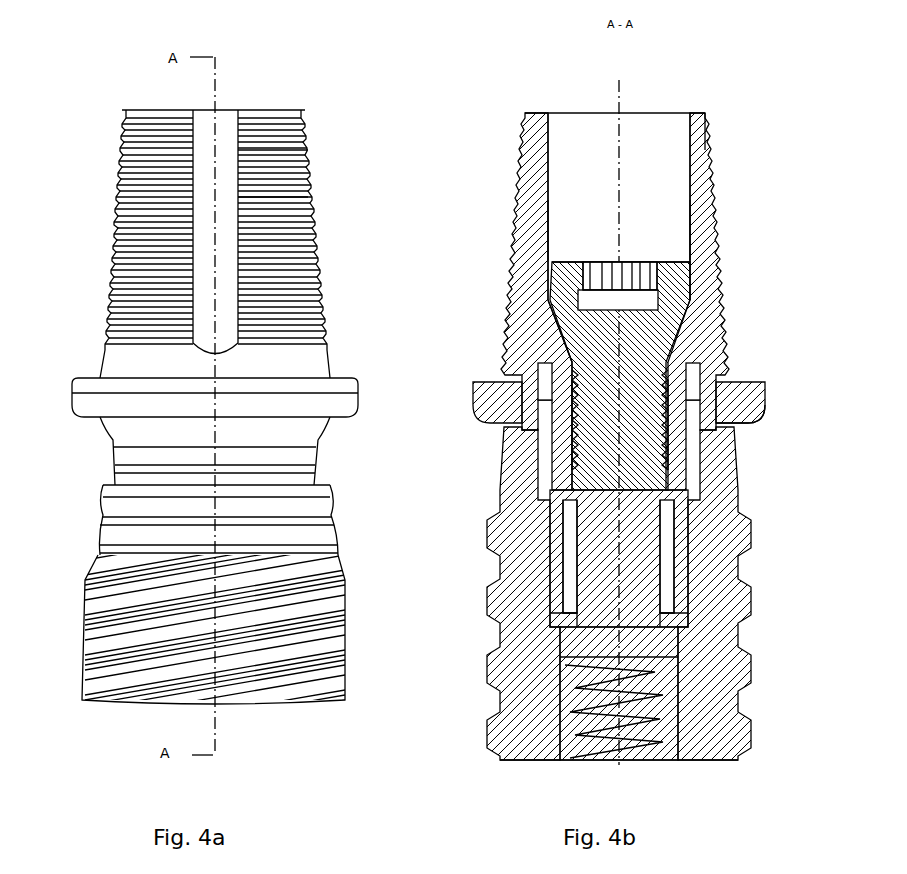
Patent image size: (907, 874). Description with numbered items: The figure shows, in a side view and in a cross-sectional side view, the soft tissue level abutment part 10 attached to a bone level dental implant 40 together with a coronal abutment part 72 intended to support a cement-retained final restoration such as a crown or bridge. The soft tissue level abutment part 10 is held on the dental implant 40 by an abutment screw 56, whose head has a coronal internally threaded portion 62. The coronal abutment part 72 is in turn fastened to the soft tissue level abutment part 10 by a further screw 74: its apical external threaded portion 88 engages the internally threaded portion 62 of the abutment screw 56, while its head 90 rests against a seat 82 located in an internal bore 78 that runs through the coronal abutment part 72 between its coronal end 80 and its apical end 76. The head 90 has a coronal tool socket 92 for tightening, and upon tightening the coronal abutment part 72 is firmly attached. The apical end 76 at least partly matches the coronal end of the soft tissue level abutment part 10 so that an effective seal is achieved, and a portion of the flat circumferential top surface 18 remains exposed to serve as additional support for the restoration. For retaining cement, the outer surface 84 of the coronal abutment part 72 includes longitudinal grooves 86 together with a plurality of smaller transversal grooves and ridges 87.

In FIG. 4A, the soft tissue level abutment part 10 is at (322, 430).
In FIG. 4B, the soft tissue level abutment part 10 is at (716, 470).
In FIG. 4B, the flat circumferential top surface 18 is at (480, 381).
In FIG. 4A, the dental implant 40 is at (334, 493).
In FIG. 4B, the dental implant 40 is at (692, 756).
In FIG. 4B, the abutment screw 56 is at (640, 570).
In FIG. 4B, the coronal internally threaded portion 62 is at (740, 454).
In FIG. 4A, the coronal abutment part 72 is at (120, 117).
In FIG. 4B, the coronal abutment part 72 is at (524, 138).
In FIG. 4B, the further screw 74 is at (670, 258).
In FIG. 4B, the apical end 76 is at (737, 424).
In FIG. 4B, the internal bore 78 is at (662, 187).
In FIG. 4B, the coronal end 80 is at (532, 112).
In FIG. 4B, the seat 82 is at (556, 327).
In FIG. 4B, the outer surface 84 is at (518, 282).
In FIG. 4A, the longitudinal grooves 86 is at (231, 128).
In FIG. 4B, the longitudinal grooves 86 is at (712, 165).
In FIG. 4A, the transversal grooves and ridges 87 is at (308, 197).
In FIG. 4B, the apical external threaded portion 88 is at (720, 450).
In FIG. 4B, the head 90 is at (573, 262).
In FIG. 4B, the coronal tool socket 92 is at (598, 262).